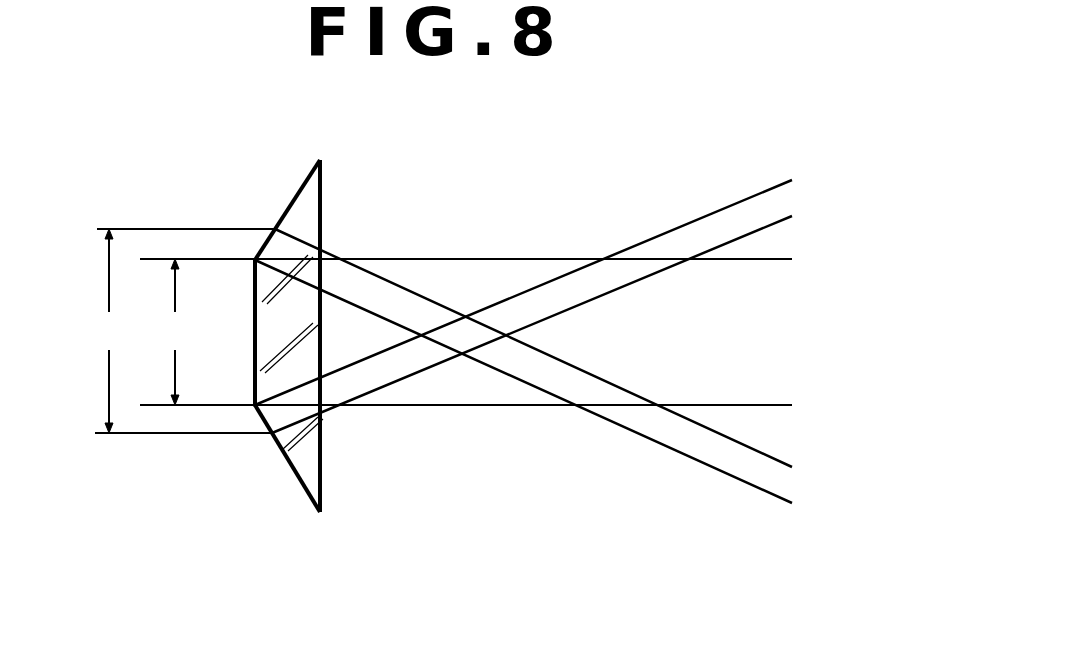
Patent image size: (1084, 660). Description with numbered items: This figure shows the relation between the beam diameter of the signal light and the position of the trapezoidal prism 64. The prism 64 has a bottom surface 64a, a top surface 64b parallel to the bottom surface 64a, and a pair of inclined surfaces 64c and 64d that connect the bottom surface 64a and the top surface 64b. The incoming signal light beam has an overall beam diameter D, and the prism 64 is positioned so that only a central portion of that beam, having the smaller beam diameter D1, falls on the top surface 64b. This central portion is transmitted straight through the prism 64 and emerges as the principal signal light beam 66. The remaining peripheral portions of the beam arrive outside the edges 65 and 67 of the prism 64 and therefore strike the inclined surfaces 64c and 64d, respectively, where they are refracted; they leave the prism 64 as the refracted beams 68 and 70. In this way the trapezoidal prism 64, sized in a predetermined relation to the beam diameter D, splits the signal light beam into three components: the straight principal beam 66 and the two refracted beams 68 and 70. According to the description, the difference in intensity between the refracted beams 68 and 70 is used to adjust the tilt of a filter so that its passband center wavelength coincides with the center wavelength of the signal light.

The trapezoidal prism 64 is at (323, 209).
The bottom surface 64a is at (321, 348).
The top surface 64b is at (253, 332).
The inclined surface 64c is at (297, 478).
The inclined surface 64d is at (300, 183).
The edge 65 is at (258, 405).
The principal signal light beam 66 is at (482, 275).
The edge 67 is at (253, 258).
The refracted beam 68 is at (715, 220).
The refracted beam 70 is at (708, 457).
The beam diameter D is at (185, 331).
The beam diameter D1 is at (179, 332).